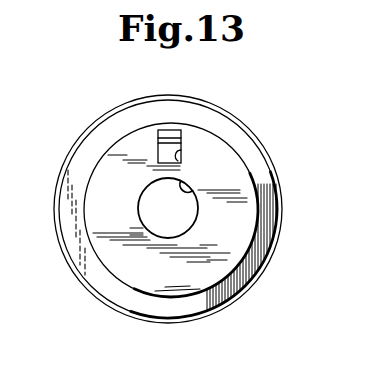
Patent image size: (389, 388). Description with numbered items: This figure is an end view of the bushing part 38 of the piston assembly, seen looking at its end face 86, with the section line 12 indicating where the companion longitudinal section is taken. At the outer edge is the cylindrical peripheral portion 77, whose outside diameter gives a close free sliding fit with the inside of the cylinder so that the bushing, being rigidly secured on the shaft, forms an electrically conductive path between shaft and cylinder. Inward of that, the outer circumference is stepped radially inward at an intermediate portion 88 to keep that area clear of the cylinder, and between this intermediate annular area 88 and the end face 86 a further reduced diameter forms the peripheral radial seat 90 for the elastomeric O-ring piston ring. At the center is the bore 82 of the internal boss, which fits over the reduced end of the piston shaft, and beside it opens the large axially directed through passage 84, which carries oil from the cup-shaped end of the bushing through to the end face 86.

The section line 12 is at (190, 77).
The bushing part 38 is at (93, 203).
The cylindrical peripheral portion 77 is at (255, 288).
The bore 82 is at (188, 186).
The through passage 84 is at (180, 150).
The end face 86 is at (235, 178).
The intermediate portion 88 is at (280, 233).
The peripheral radial seat 90 is at (243, 258).